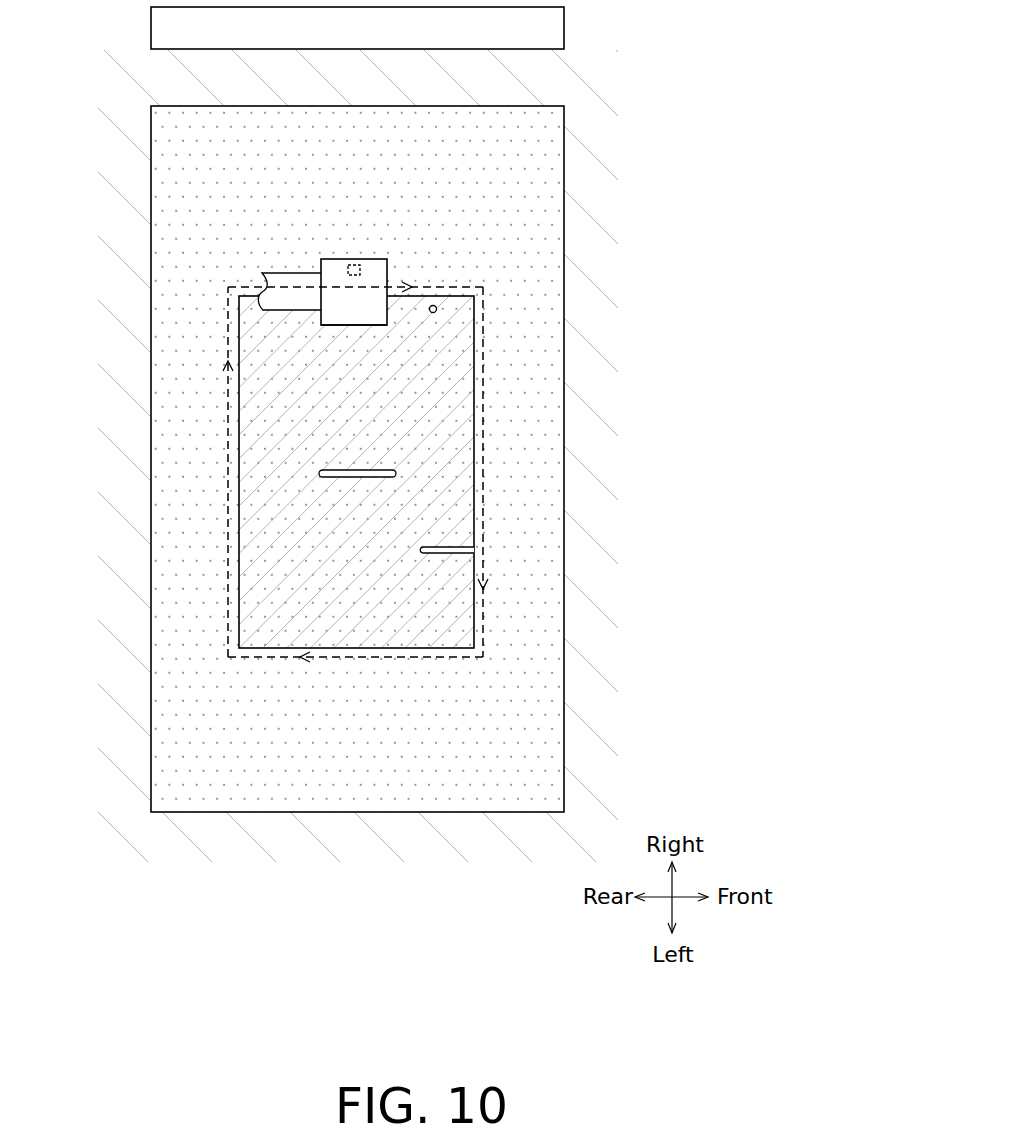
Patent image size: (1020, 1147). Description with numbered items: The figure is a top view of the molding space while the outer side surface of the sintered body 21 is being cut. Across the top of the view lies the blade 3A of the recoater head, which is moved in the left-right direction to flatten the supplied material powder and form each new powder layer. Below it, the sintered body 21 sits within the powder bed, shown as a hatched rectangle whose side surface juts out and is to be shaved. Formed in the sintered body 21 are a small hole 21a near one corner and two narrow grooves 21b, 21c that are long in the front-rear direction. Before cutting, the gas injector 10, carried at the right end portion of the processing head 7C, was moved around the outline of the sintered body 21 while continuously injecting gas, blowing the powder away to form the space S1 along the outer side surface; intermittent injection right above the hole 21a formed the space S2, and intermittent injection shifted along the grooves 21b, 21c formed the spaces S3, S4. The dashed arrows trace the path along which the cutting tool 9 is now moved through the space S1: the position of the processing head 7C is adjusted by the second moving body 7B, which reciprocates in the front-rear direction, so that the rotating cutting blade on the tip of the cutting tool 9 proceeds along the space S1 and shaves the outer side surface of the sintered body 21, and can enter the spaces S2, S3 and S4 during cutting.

The blade 3A is at (551, 30).
The gas injector 10 is at (360, 258).
The cutting tool 9 is at (357, 284).
The second moving body 7B is at (297, 303).
The processing head 7C is at (363, 315).
The sintered body 21 is at (375, 638).
The small hole 21a is at (434, 313).
The narrow groove 21b is at (345, 478).
The narrow groove 21c is at (447, 554).
The space S1 is at (229, 331).
The space S2 is at (441, 307).
The space S3 is at (383, 467).
The space S4 is at (458, 542).